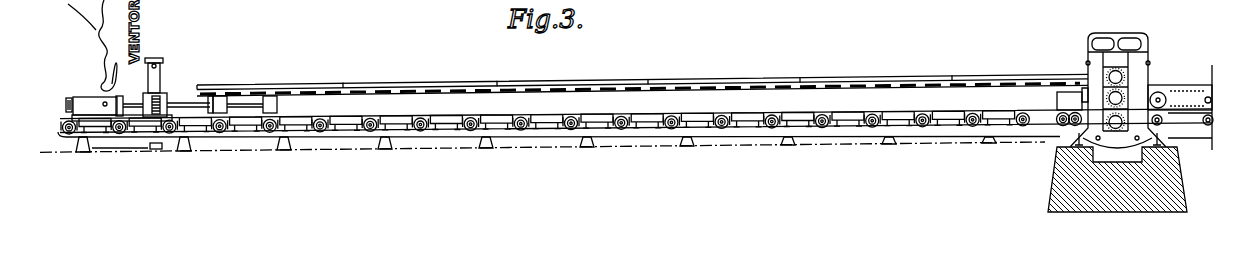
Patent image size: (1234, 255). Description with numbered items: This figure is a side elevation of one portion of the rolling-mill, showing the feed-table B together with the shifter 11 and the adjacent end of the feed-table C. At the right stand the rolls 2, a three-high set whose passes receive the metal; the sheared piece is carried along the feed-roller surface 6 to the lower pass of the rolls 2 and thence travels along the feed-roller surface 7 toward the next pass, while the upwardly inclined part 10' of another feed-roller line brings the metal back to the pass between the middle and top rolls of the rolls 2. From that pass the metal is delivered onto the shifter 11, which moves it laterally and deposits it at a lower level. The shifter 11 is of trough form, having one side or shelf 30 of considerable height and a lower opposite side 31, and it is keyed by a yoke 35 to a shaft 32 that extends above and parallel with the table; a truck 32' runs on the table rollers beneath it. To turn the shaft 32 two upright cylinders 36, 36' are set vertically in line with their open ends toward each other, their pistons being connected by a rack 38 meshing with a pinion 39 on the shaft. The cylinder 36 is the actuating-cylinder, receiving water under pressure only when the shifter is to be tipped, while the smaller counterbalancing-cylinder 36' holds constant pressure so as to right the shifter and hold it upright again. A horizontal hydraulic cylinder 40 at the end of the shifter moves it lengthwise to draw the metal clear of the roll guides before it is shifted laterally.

The rolls 2 is at (1118, 90).
The feed-roller surface 6 is at (62, 127).
The feed-roller surface 7 is at (1190, 112).
The upwardly inclined half of feed-roller line 10' is at (1180, 107).
The shifter 11 is at (752, 86).
The side or shelf 30 is at (576, 83).
The other side 31 is at (624, 86).
The shaft 32 is at (1070, 109).
The truck 32' is at (196, 108).
The yoke 35 is at (263, 110).
The actuating-cylinder 36 is at (168, 74).
The counterbalancing-cylinder 36' is at (161, 156).
The rack 38 is at (163, 98).
The pinion 39 is at (148, 96).
The hydraulic cylinder 40 is at (80, 99).
The feed-table B is at (647, 66).
The feed-table C is at (1190, 79).